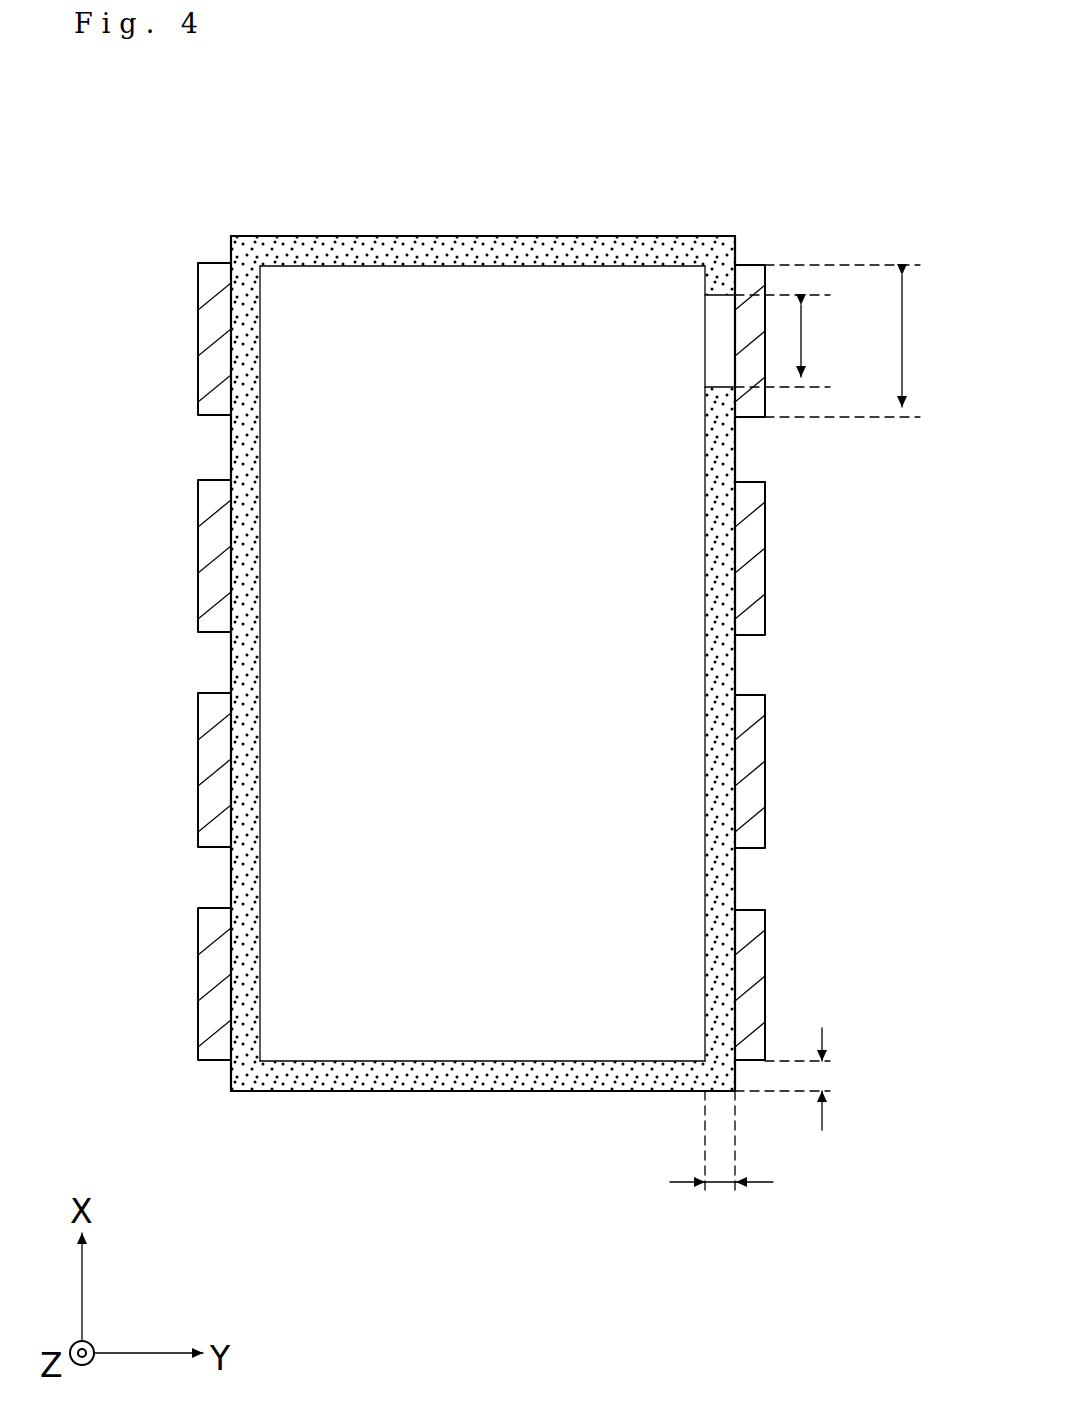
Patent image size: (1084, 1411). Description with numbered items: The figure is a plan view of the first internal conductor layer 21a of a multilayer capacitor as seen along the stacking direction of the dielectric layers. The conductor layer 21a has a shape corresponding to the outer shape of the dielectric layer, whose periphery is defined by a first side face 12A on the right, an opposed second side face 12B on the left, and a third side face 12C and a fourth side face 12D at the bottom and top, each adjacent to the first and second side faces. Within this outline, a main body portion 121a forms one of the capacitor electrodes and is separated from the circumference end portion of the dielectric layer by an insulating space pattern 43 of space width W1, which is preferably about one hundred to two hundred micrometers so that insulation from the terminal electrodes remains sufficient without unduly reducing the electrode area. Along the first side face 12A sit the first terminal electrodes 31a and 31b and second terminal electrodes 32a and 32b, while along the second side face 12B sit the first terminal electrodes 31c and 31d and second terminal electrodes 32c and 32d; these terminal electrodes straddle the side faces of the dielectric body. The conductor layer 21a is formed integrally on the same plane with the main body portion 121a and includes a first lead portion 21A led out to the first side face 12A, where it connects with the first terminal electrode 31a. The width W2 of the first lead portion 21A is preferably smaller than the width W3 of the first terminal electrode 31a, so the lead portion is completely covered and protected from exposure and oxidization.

The first side face 12A is at (737, 665).
The second side face 12B is at (229, 663).
The third side face 12C is at (380, 1092).
The fourth side face 12D is at (517, 236).
The first internal conductor layer 21a is at (348, 458).
The first lead portion 21A is at (720, 343).
The insulating space pattern 43 is at (482, 1078).
The main body portion 121a is at (588, 865).
The first terminal electrode 31a is at (752, 265).
The first terminal electrode 31b is at (765, 765).
The first terminal electrode 31c is at (198, 980).
The first terminal electrode 31d is at (198, 563).
The second terminal electrode 32a is at (765, 550).
The second terminal electrode 32b is at (767, 970).
The second terminal electrode 32c is at (198, 775).
The second terminal electrode 32d is at (198, 350).
The space width W1 is at (822, 1078).
The width of the first lead portion W2 is at (798, 341).
The width of the first terminal electrode W3 is at (864, 341).